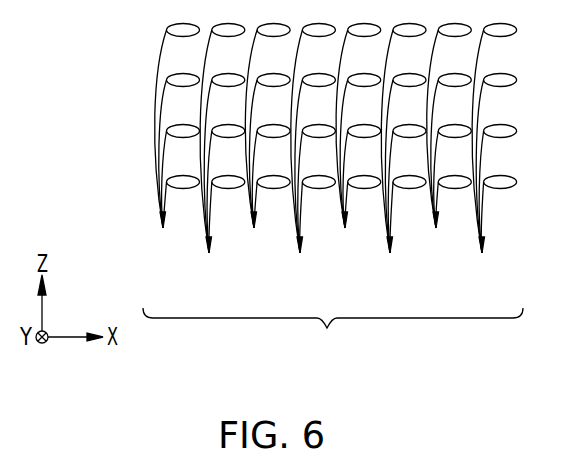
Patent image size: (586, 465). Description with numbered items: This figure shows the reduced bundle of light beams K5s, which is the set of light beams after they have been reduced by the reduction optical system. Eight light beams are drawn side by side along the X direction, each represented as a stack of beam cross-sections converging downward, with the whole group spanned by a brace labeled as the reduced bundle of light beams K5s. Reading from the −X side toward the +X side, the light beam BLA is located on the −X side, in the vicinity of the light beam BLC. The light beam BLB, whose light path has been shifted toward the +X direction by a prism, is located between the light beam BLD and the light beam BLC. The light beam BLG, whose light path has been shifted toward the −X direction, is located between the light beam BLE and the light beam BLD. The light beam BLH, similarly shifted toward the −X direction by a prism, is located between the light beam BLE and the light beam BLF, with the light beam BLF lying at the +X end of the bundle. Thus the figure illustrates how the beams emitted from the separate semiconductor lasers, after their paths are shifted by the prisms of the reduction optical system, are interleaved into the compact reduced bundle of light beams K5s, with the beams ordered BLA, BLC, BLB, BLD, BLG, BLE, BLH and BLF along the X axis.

The light beam BLA is at (175, 142).
The light beam BLB is at (264, 142).
The light beam BLC is at (220, 156).
The light beam BLD is at (310, 156).
The light beam BLE is at (403, 156).
The light beam BLF is at (492, 156).
The light beam BLG is at (355, 142).
The light beam BLH is at (444, 142).
The reduced bundle of light beams K5s is at (333, 333).